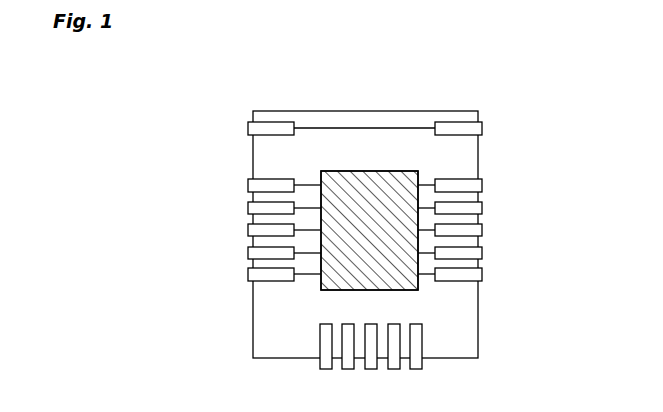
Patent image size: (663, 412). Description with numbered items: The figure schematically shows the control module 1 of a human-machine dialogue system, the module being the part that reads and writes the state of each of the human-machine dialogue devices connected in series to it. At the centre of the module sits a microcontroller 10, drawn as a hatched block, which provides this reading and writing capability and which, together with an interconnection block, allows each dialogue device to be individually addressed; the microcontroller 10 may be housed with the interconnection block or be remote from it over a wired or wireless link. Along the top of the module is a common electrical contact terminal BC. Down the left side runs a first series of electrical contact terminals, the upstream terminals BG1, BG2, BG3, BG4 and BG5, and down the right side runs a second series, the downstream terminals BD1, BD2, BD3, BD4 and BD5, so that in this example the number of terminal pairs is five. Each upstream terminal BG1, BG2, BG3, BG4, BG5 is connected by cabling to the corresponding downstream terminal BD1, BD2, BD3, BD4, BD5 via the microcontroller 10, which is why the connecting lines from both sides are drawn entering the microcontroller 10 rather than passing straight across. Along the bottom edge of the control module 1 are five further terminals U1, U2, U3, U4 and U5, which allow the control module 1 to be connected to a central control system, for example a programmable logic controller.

The control module 1 is at (235, 102).
The microcontroller 10 is at (365, 171).
The common electrical contact terminal BC is at (482, 128).
The upstream terminal BG1 is at (248, 183).
The upstream terminal BG2 is at (248, 208).
The upstream terminal BG3 is at (248, 230).
The upstream terminal BG4 is at (248, 253).
The upstream terminal BG5 is at (248, 274).
The downstream terminal BD1 is at (482, 185).
The downstream terminal BD2 is at (482, 208).
The downstream terminal BD3 is at (482, 230).
The downstream terminal BD4 is at (482, 253).
The downstream terminal BD5 is at (482, 274).
The terminal U1 is at (326, 369).
The terminal U2 is at (348, 369).
The terminal U3 is at (371, 369).
The terminal U4 is at (393, 369).
The terminal U5 is at (415, 369).